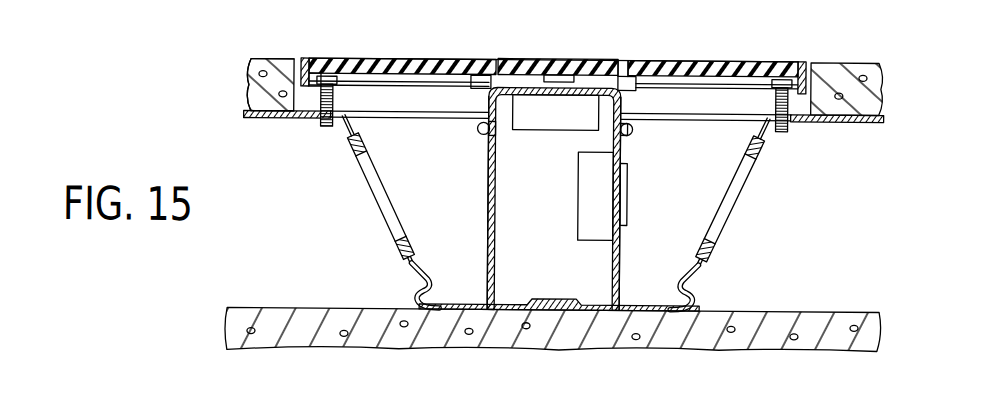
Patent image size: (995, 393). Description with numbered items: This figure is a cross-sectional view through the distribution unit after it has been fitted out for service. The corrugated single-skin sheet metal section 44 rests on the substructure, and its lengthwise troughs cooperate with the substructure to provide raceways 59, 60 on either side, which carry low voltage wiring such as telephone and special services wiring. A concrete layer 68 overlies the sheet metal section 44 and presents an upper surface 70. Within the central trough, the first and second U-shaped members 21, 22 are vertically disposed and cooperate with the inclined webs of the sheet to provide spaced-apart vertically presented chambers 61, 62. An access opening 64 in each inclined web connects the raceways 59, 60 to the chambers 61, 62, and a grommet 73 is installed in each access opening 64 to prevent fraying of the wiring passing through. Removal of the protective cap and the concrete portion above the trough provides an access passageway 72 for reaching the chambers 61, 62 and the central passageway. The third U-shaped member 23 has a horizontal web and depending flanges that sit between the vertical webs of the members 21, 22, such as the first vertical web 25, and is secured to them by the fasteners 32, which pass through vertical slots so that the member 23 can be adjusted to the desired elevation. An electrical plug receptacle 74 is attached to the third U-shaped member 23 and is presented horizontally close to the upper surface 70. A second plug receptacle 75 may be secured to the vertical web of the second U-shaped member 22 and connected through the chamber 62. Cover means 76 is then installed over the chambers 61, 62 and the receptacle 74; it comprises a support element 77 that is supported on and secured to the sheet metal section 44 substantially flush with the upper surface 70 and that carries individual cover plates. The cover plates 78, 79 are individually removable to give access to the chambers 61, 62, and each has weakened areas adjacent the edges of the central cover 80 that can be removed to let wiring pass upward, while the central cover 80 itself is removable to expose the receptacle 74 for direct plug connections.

The upper surface 70 is at (280, 60).
The concrete layer 68 is at (253, 86).
The corrugated single-skin sheet metal section 44 is at (260, 124).
The access passageway 72 is at (806, 104).
The cover plate 78 is at (447, 60).
The central cover 80 is at (570, 59).
The third U-shaped member 23 is at (589, 59).
The cover plate 79 is at (657, 60).
The cover means 76 is at (718, 52).
The support element 77 is at (797, 78).
The first U-shaped member 21 is at (606, 271).
The second U-shaped member 22 is at (500, 271).
The first vertical web 25 is at (623, 262).
The electrical plug receptacle 74 is at (540, 122).
The second plug receptacle 75 is at (584, 210).
The fasteners 32 is at (478, 129).
The access opening 64 is at (736, 184).
The grommet 73 is at (714, 253).
The vertically presented chamber 62 is at (420, 209).
The vertically presented chamber 61 is at (657, 207).
The raceway 59 is at (262, 233).
The raceway 60 is at (810, 237).